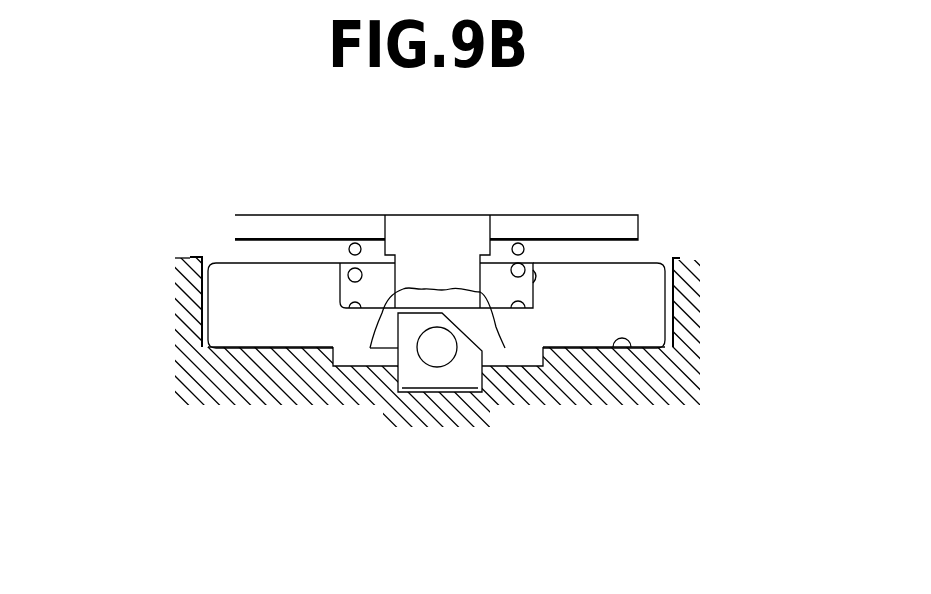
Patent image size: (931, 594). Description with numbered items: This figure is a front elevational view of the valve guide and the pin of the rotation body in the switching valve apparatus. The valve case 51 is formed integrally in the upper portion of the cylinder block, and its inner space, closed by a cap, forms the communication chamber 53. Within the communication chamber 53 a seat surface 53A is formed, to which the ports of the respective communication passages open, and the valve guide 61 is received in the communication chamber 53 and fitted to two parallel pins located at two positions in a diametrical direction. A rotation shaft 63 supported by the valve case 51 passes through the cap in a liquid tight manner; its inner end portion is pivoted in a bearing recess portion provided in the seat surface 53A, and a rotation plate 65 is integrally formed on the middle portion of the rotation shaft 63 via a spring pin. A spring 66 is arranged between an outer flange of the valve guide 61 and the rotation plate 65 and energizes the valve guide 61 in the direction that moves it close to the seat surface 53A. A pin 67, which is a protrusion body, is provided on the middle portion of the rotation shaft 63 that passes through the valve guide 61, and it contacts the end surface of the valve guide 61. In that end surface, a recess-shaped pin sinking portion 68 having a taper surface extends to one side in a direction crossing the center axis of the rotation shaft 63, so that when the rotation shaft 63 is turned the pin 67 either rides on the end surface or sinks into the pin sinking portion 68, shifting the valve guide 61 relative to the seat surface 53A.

The valve case 51 is at (185, 310).
The communication chamber 53 is at (528, 262).
The seat surface 53A is at (636, 350).
The valve guide 61 is at (637, 273).
The rotation shaft 63 is at (413, 327).
The rotation plate 65 is at (235, 228).
The spring 66 is at (518, 266).
The pin 67 is at (442, 352).
The pin sinking portion 68 is at (462, 342).